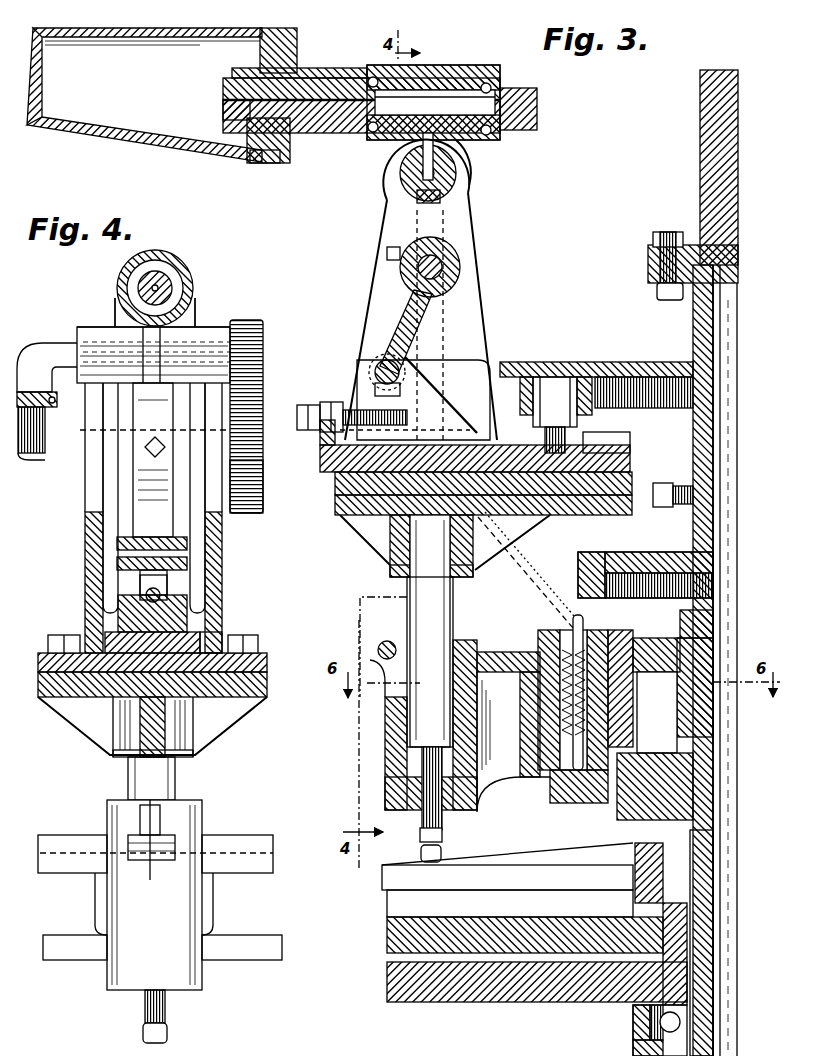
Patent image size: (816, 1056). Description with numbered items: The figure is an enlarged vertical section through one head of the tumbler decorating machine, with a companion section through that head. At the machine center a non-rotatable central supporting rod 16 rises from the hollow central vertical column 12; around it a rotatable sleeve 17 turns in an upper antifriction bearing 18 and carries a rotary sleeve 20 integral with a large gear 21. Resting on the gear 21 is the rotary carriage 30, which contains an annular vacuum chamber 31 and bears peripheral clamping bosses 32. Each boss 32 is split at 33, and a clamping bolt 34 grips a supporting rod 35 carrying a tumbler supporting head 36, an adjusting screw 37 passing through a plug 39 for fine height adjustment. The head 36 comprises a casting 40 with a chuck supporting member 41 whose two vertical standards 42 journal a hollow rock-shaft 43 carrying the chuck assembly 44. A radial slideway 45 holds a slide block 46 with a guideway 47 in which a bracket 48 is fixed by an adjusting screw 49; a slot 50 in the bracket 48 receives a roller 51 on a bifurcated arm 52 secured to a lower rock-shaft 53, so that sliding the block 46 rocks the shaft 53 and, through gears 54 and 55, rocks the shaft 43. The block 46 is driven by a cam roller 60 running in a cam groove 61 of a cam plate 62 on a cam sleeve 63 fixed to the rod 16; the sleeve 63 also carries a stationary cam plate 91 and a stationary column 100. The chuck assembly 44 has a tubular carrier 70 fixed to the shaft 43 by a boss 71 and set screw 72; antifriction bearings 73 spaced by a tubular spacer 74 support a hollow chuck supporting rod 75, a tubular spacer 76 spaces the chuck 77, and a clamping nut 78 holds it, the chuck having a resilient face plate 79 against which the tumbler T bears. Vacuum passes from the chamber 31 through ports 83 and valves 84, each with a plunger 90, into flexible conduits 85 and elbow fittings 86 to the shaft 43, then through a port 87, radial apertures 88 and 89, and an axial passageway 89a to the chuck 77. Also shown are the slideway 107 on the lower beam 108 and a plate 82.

In FIG. 3, the tumbler T is at (175, 148).
In FIG. 3, the hollow central vertical column 12 is at (637, 1043).
In FIG. 3, the central supporting rod 16 is at (727, 788).
In FIG. 3, the rotatable sleeve 17 is at (704, 877).
In FIG. 3, the upper antifriction bearing 18 is at (655, 1025).
In FIG. 3, the rotary sleeve 20 is at (633, 900).
In FIG. 3, the gear 21 is at (560, 994).
In FIG. 3, the rotary carriage 30 is at (545, 808).
In FIG. 4, the rotary carriage 30 is at (237, 842).
In FIG. 3, the annular vacuum chamber 31 is at (638, 800).
In FIG. 3, the clamping boss 32 is at (395, 730).
In FIG. 4, the clamping boss 32 is at (190, 897).
In FIG. 3, the split 33 is at (376, 657).
In FIG. 4, the split 33 is at (152, 807).
In FIG. 3, the clamping bolt 34 is at (375, 640).
In FIG. 4, the clamping bolt 34 is at (155, 825).
In FIG. 3, the supporting rod 35 is at (416, 594).
In FIG. 4, the supporting rod 35 is at (172, 775).
In FIG. 3, the tumbler supporting head 36 is at (388, 560).
In FIG. 4, the tumbler supporting head 36 is at (200, 740).
In FIG. 3, the adjusting screw 37 is at (444, 852).
In FIG. 4, the adjusting screw 37 is at (168, 1013).
In FIG. 3, the plug 39 is at (452, 805).
In FIG. 3, the casting 40 is at (341, 518).
In FIG. 4, the casting 40 is at (264, 697).
In FIG. 3, the chuck supporting member 41 is at (345, 504).
In FIG. 4, the chuck supporting member 41 is at (268, 660).
In FIG. 3, the vertical standards 42 is at (480, 293).
In FIG. 4, the vertical standards 42 is at (98, 522).
In FIG. 3, the hollow rock-shaft 43 is at (458, 178).
In FIG. 4, the hollow rock-shaft 43 is at (202, 337).
In FIG. 3, the chuck assembly 44 is at (366, 155).
In FIG. 4, the chuck assembly 44 is at (100, 282).
In FIG. 3, the radial slideway 45 is at (620, 462).
In FIG. 4, the radial slideway 45 is at (205, 640).
In FIG. 3, the slide block 46 is at (340, 474).
In FIG. 4, the slide block 46 is at (185, 630).
In FIG. 3, the guideway 47 is at (487, 428).
In FIG. 4, the guideway 47 is at (192, 605).
In FIG. 3, the bracket 48 is at (440, 398).
In FIG. 4, the bracket 48 is at (168, 587).
In FIG. 3, the adjusting screw 49 is at (305, 404).
In FIG. 4, the adjusting screw 49 is at (146, 593).
In FIG. 3, the slot 50 is at (400, 390).
In FIG. 4, the slot 50 is at (150, 573).
In FIG. 3, the roller 51 is at (378, 366).
In FIG. 4, the roller 51 is at (118, 545).
In FIG. 3, the bifurcated arm 52 is at (392, 320).
In FIG. 4, the bifurcated arm 52 is at (126, 498).
In FIG. 3, the rock-shaft 53 is at (443, 265).
In FIG. 4, the rock-shaft 53 is at (127, 433).
In FIG. 4, the gear 54 is at (262, 503).
In FIG. 4, the gear 55 is at (248, 327).
In FIG. 3, the cam roller 60 is at (545, 385).
In FIG. 3, the cam groove 61 is at (560, 378).
In FIG. 3, the cam plate 62 is at (598, 365).
In FIG. 3, the cam sleeve 63 is at (700, 322).
In FIG. 3, the tubular carrier 70 is at (402, 165).
In FIG. 4, the tubular carrier 70 is at (168, 272).
In FIG. 3, the boss 71 is at (420, 176).
In FIG. 4, the boss 71 is at (118, 335).
In FIG. 3, the set screw 72 is at (420, 198).
In FIG. 3, the antifriction bearings 73 is at (497, 85).
In FIG. 3, the tubular spacer 74 is at (446, 90).
In FIG. 4, the tubular spacer 74 is at (173, 282).
In FIG. 3, the chuck supporting rod 75 is at (340, 118).
In FIG. 4, the chuck supporting rod 75 is at (173, 288).
In FIG. 3, the tubular spacer 76 is at (345, 70).
In FIG. 3, the chuck 77 is at (290, 42).
In FIG. 3, the clamping nut 78 is at (232, 114).
In FIG. 3, the resilient face plate 79 is at (257, 163).
In FIG. 3, the plate 82 is at (712, 815).
In FIG. 3, the ports 83 is at (600, 800).
In FIG. 3, the valve 84 is at (615, 632).
In FIG. 4, the valve 84 is at (214, 917).
In FIG. 3, the flexible conduit 85 is at (500, 578).
In FIG. 4, the flexible conduit 85 is at (22, 448).
In FIG. 4, the elbow fitting 86 is at (38, 350).
In FIG. 3, the port 87 is at (470, 160).
In FIG. 4, the port 87 is at (118, 325).
In FIG. 3, the radial aperture 88 is at (445, 100).
In FIG. 3, the radial aperture 89 is at (428, 93).
In FIG. 3, the axial passageway 89a is at (345, 97).
In FIG. 3, the plunger 90 is at (578, 616).
In FIG. 3, the stationary cam plate 91 is at (598, 556).
In FIG. 3, the stationary column 100 is at (712, 163).
In FIG. 3, the slideway 107 is at (397, 897).
In FIG. 3, the lower beam 108 is at (400, 930).